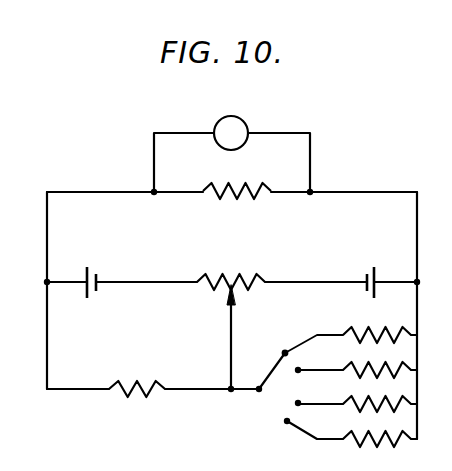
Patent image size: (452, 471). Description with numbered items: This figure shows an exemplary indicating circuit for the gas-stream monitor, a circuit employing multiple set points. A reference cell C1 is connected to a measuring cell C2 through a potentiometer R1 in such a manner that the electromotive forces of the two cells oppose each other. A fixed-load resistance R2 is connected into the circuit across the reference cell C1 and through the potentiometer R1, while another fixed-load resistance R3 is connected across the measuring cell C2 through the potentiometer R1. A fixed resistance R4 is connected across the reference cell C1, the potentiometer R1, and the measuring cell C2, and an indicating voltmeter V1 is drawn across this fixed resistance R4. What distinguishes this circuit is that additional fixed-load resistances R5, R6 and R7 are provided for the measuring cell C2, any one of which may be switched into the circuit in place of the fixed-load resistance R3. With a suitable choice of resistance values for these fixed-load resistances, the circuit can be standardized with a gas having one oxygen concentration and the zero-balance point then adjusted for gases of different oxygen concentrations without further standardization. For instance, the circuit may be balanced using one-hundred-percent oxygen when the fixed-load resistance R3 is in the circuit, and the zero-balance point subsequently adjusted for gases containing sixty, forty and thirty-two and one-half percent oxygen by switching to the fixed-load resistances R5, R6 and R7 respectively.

The voltmeter V1 is at (231, 120).
The fixed resistance R4 is at (237, 179).
The reference cell C1 is at (91, 270).
The potentiometer R1 is at (231, 268).
The measuring cell C2 is at (368, 271).
The fixed-load resistance R3 is at (377, 324).
The fixed-load resistance R5 is at (377, 361).
The fixed-load resistance R6 is at (377, 396).
The fixed-load resistance R7 is at (377, 429).
The fixed-load resistance R2 is at (137, 377).